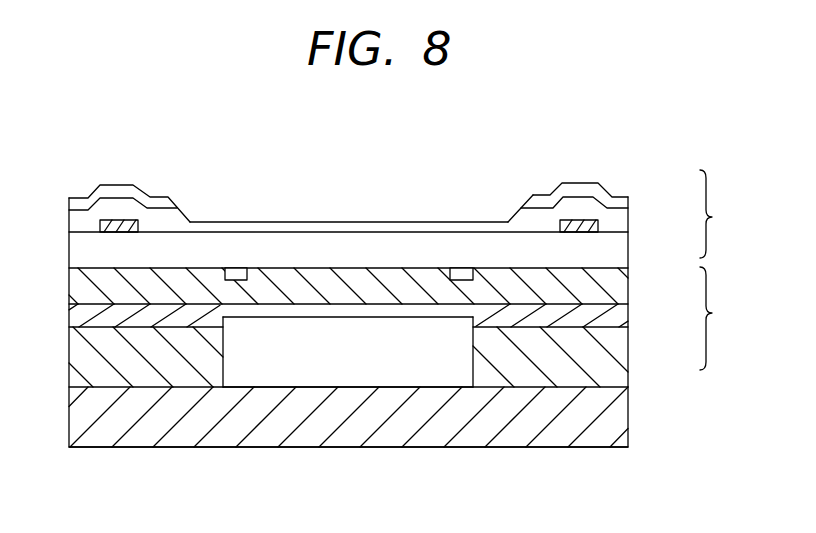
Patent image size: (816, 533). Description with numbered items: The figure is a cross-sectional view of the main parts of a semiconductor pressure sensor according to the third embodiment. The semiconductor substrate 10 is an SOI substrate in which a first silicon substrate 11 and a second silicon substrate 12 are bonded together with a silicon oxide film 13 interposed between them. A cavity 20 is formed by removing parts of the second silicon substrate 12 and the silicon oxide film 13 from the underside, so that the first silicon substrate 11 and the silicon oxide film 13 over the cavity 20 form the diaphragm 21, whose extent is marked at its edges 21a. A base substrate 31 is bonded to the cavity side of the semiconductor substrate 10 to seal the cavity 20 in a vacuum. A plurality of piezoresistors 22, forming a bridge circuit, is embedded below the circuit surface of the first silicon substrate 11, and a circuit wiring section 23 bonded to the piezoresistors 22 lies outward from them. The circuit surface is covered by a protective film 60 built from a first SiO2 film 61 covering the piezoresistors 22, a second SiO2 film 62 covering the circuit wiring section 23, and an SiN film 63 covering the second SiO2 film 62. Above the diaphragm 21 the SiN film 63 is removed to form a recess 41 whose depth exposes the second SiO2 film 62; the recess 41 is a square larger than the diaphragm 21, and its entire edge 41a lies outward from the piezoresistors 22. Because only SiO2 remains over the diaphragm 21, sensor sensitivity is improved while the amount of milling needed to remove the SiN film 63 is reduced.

The semiconductor substrate 10 is at (723, 318).
The first silicon substrate 11 is at (617, 285).
The second silicon substrate 12 is at (617, 357).
The silicon oxide film 13 is at (617, 317).
The cavity 20 is at (335, 366).
The diaphragm 21 is at (365, 268).
The edge of vibrating plate 21a is at (228, 319).
The piezoresistor 22 is at (233, 268).
The circuit wiring section 23 is at (113, 220).
The base substrate 31 is at (617, 417).
The recess 41 is at (294, 195).
The edge 41a is at (507, 218).
The protective film 60 is at (723, 214).
The first SiO2 film 61 is at (617, 253).
The second SiO2 film 62 is at (617, 223).
The SiN film 63 is at (132, 183).